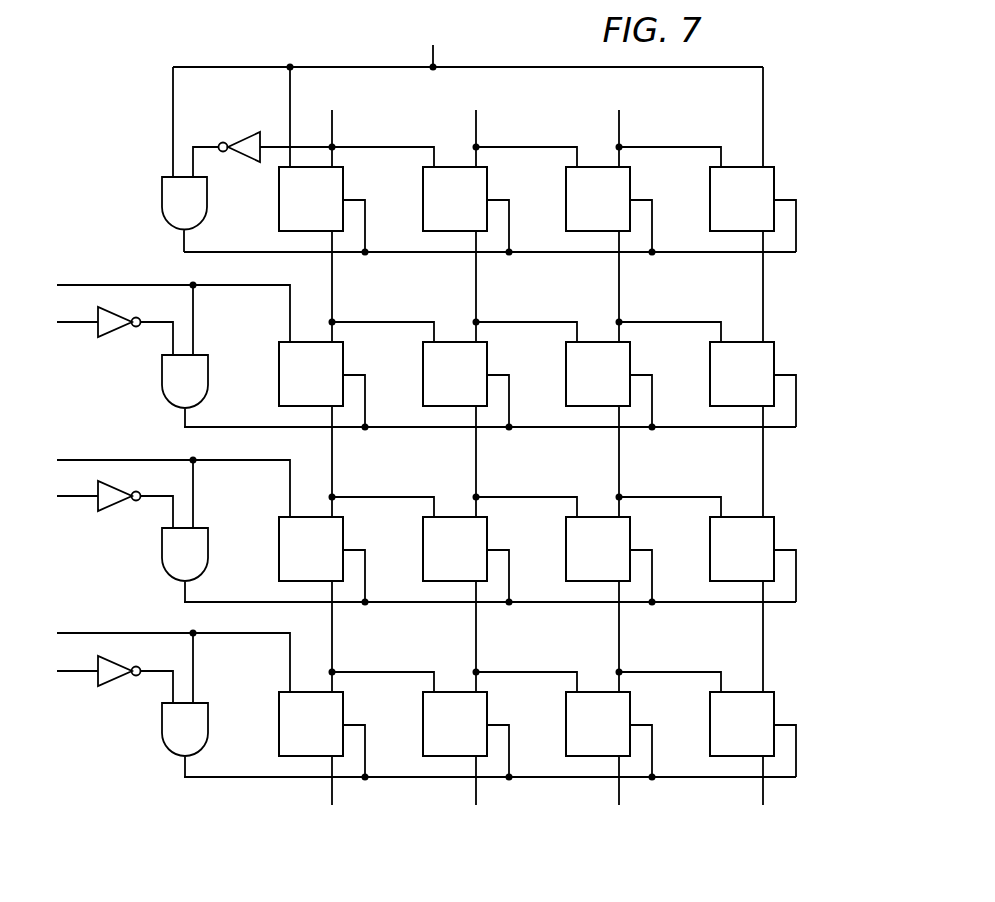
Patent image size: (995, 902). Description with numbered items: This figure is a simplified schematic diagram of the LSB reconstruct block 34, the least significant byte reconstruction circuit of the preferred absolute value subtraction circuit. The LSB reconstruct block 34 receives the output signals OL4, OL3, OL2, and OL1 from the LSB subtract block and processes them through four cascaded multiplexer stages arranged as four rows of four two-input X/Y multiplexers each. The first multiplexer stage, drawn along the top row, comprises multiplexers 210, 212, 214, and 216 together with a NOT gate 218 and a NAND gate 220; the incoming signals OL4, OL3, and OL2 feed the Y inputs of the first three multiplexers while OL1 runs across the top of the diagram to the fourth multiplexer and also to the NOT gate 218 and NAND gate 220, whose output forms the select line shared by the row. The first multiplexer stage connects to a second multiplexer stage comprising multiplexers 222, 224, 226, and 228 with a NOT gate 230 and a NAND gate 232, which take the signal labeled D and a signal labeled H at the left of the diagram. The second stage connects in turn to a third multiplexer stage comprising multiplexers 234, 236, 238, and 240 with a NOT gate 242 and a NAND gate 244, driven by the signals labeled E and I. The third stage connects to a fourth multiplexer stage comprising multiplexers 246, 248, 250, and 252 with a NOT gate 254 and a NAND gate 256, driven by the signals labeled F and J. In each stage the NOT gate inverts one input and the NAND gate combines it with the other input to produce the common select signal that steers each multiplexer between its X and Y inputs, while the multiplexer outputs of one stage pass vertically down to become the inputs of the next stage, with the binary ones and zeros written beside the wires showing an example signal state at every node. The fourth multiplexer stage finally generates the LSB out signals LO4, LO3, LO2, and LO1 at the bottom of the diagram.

The LSB reconstruct block 34 is at (188, 803).
The multiplexer 210 is at (343, 188).
The multiplexer 212 is at (487, 188).
The multiplexer 214 is at (630, 188).
The multiplexer 216 is at (774, 188).
The NOT gate 218 is at (242, 136).
The NAND gate 220 is at (162, 194).
The multiplexer 222 is at (343, 363).
The multiplexer 224 is at (487, 363).
The multiplexer 226 is at (630, 363).
The multiplexer 228 is at (774, 363).
The NOT gate 230 is at (98, 334).
The NAND gate 232 is at (162, 372).
The multiplexer 234 is at (343, 538).
The multiplexer 236 is at (487, 538).
The multiplexer 238 is at (630, 538).
The multiplexer 240 is at (774, 538).
The NOT gate 242 is at (98, 508).
The NAND gate 244 is at (162, 545).
The multiplexer 246 is at (343, 713).
The multiplexer 248 is at (487, 713).
The multiplexer 250 is at (630, 713).
The multiplexer 252 is at (774, 713).
The NOT gate 254 is at (98, 683).
The NAND gate 256 is at (162, 720).